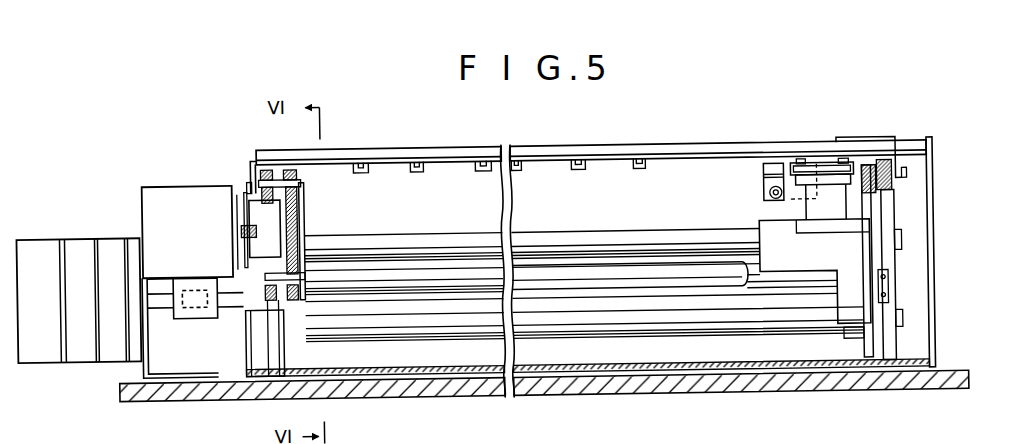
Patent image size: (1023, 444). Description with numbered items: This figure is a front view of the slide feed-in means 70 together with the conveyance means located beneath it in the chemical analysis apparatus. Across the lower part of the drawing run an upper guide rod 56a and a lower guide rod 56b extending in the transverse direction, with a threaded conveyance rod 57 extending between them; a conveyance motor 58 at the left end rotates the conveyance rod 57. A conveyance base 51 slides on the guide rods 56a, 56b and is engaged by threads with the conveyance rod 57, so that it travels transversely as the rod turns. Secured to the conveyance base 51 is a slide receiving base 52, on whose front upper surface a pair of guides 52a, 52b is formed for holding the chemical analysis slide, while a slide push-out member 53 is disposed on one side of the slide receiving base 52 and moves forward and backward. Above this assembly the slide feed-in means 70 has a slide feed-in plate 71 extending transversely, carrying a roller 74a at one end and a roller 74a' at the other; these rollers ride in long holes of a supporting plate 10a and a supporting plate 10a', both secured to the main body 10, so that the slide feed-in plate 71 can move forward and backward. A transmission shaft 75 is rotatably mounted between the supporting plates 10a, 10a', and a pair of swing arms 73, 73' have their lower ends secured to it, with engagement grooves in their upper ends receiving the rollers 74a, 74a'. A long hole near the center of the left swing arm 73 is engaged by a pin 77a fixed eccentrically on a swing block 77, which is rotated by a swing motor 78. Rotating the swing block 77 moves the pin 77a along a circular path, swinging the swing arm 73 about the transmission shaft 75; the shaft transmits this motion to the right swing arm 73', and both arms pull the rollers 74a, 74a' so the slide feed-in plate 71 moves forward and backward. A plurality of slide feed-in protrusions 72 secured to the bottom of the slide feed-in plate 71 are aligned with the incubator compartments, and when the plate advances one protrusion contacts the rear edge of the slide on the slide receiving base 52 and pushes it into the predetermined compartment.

The main body 10 is at (427, 379).
The supporting plate 10a is at (364, 363).
The supporting plate 10a' is at (723, 284).
The conveyance base 51 is at (810, 257).
The slide receiving base 52 is at (825, 168).
The guide 52a is at (845, 163).
The guide 52b is at (802, 164).
The slide push-out member 53 is at (772, 166).
The upper guide rod 56a is at (673, 237).
The lower guide rod 56b is at (673, 326).
The conveyance rod 57 is at (773, 292).
The conveyance motor 58 is at (38, 238).
The slide feed-in means 70 is at (278, 137).
The slide feed-in plate 71 is at (400, 158).
The slide feed-in protrusion 72 is at (370, 159).
The swing arm 73 is at (331, 241).
The swing arm 73' is at (925, 261).
The roller 74a is at (315, 187).
The roller 74a' is at (915, 162).
The transmission shaft 75 is at (443, 278).
The swing block 77 is at (253, 276).
The pin 77a is at (302, 243).
The swing motor 78 is at (201, 229).